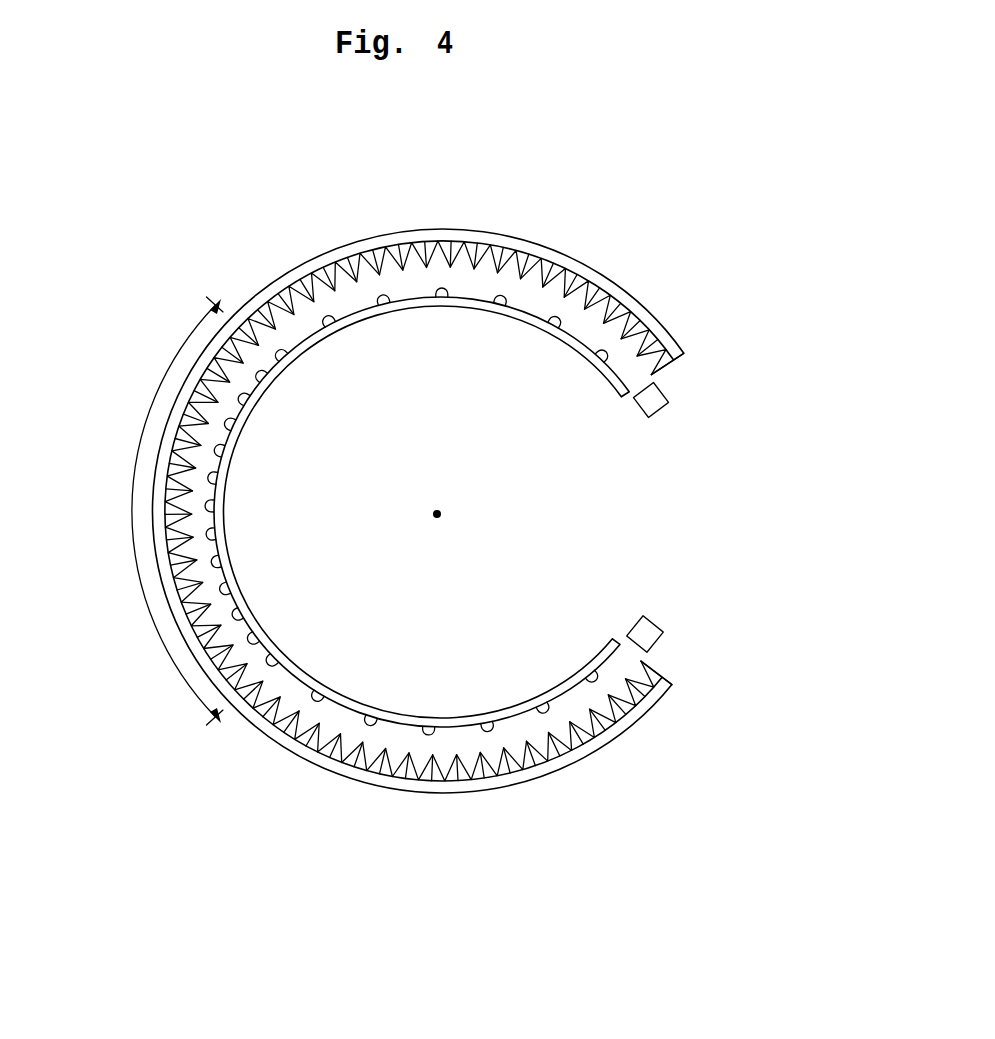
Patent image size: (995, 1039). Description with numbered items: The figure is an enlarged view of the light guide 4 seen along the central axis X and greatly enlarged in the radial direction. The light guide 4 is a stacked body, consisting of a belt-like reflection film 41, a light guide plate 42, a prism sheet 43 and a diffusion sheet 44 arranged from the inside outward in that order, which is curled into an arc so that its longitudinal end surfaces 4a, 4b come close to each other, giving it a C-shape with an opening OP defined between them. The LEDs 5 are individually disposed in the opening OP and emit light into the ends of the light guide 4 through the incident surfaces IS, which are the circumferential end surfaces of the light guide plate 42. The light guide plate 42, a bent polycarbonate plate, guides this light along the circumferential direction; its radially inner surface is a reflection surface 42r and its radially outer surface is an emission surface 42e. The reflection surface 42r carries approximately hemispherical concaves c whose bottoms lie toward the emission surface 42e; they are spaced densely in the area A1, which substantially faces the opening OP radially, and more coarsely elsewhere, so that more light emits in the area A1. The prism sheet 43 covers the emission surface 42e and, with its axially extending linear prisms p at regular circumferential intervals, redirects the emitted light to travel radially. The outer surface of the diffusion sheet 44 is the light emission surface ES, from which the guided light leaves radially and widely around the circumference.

The light guide 4 is at (118, 310).
The end surface 4a is at (683, 358).
The end surface 4b is at (672, 680).
The reflection film 41 is at (497, 298).
The light guide plate 42 is at (532, 312).
The reflection surface 42r is at (392, 718).
The emission surface 42e is at (400, 778).
The prism sheet 43 is at (513, 265).
The diffusion sheet 44 is at (592, 276).
The LED 5 is at (651, 400).
The area A1 is at (133, 535).
The central axis X is at (441, 514).
The opening OP is at (708, 497).
The incident surface IS is at (657, 378).
The light emission surface ES is at (307, 762).
The concave c is at (255, 705).
The linear prism p is at (283, 733).